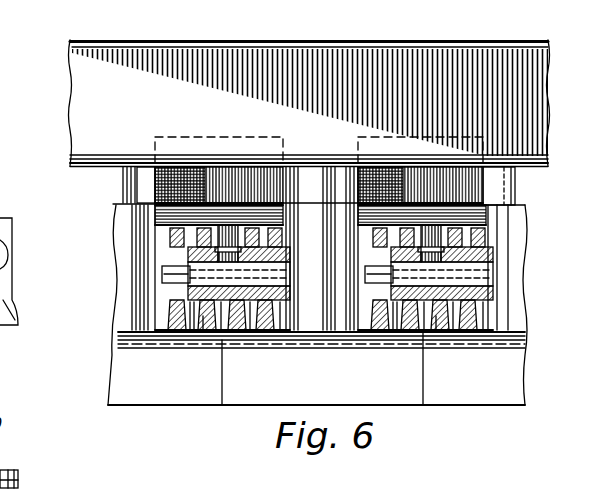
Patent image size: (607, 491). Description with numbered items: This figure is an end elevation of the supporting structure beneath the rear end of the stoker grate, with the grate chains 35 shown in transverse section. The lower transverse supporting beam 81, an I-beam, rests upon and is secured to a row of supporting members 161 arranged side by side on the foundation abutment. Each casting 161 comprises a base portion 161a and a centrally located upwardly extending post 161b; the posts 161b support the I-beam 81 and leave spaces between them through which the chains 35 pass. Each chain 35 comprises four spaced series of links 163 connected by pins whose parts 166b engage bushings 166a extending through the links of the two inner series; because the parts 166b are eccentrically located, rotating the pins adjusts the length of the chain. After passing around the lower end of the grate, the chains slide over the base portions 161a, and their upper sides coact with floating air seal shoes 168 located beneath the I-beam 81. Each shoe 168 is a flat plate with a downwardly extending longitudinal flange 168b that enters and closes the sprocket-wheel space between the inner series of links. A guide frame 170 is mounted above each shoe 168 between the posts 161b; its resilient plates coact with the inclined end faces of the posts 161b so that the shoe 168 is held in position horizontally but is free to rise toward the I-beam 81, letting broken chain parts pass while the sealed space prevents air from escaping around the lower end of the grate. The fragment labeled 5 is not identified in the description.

The lower transverse supporting beam 81 is at (70, 101).
The adjacent assembly fragment 5 is at (6, 203).
The floating air seal shoe 168 is at (478, 206).
The downwardly extending longitudinal flange 168b is at (545, 250).
The guide frame 170 is at (516, 182).
The supporting member 161 is at (492, 392).
The base portion 161a is at (177, 392).
The post 161b is at (328, 381).
The bushing 166a is at (3, 270).
The eccentric pin part 166b is at (0, 253).
The link 163 is at (478, 322).
The grate chain 35 is at (203, 331).